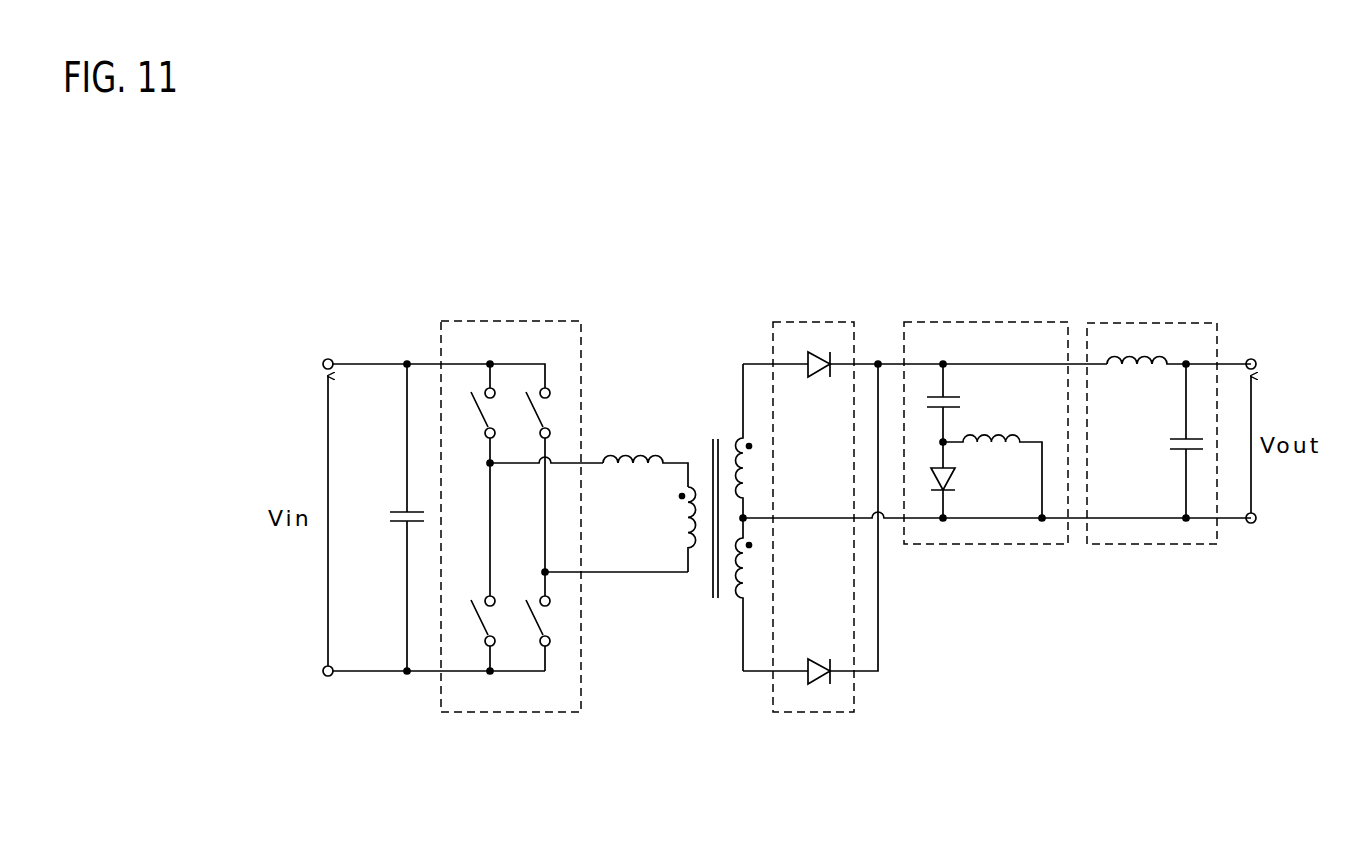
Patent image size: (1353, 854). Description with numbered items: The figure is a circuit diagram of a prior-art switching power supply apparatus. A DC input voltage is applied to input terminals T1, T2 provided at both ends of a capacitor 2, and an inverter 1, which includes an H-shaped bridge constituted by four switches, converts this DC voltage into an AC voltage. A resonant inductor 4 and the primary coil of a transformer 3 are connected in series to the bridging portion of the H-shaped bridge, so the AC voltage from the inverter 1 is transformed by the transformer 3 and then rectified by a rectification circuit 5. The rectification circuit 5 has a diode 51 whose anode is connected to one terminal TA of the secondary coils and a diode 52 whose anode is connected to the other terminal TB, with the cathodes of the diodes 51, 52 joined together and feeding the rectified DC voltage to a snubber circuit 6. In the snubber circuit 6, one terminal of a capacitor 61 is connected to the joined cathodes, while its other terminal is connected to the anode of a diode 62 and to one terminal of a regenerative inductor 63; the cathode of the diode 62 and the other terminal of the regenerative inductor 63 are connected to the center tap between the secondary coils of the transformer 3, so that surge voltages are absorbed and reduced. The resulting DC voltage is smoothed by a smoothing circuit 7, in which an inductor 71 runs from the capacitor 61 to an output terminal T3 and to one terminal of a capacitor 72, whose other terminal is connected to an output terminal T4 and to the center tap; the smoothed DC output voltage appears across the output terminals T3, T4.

The inverter 1 is at (483, 321).
The capacitor 2 is at (384, 520).
The transformer 3 is at (699, 451).
The resonant inductor 4 is at (634, 450).
The rectification circuit 5 is at (997, 499).
The snubber circuit 6 is at (986, 415).
The smoothing circuit 7 is at (1169, 415).
The diode 51 is at (819, 381).
The diode 52 is at (816, 655).
The capacitor 61 is at (962, 406).
The diode 62 is at (961, 478).
The regenerative inductor 63 is at (1020, 438).
The inductor 71 is at (1145, 375).
The capacitor 72 is at (1168, 442).
The input terminal T1 is at (326, 356).
The input terminal T2 is at (328, 677).
The output terminal T3 is at (1252, 358).
The output terminal T4 is at (1251, 524).
The terminal of secondary coils TA is at (738, 440).
The terminal of secondary coils TB is at (736, 598).